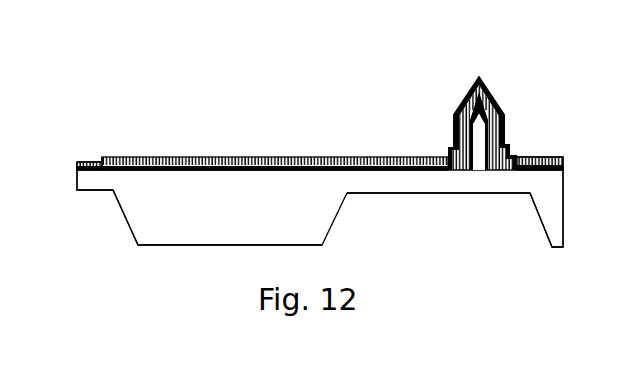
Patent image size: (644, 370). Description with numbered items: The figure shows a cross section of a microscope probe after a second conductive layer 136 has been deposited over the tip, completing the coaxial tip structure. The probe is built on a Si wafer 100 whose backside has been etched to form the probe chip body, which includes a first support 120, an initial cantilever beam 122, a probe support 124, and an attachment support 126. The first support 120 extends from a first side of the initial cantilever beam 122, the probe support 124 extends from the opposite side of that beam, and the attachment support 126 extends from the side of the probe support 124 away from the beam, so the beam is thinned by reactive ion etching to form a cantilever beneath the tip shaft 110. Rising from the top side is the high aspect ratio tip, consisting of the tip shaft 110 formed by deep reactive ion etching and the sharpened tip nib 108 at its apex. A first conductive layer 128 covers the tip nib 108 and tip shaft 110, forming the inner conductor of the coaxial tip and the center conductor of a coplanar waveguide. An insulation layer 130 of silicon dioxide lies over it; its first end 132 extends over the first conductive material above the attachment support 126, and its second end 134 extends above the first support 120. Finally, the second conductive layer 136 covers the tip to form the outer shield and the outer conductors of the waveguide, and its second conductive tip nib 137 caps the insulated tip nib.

The Si wafer 100 is at (207, 229).
The tip nib 108 is at (494, 97).
The tip shaft 110 is at (540, 131).
The first support 120 is at (555, 225).
The initial cantilever beam 122 is at (453, 178).
The probe support 124 is at (150, 215).
The attachment support 126 is at (97, 185).
The first conductive layer 128 is at (102, 168).
The insulation layer 130 is at (343, 155).
The first end of insulation layer 132 is at (93, 158).
The second end of insulation layer 134 is at (562, 165).
The second conductive layer 136 is at (455, 113).
The second conductive tip nib 137 is at (485, 87).